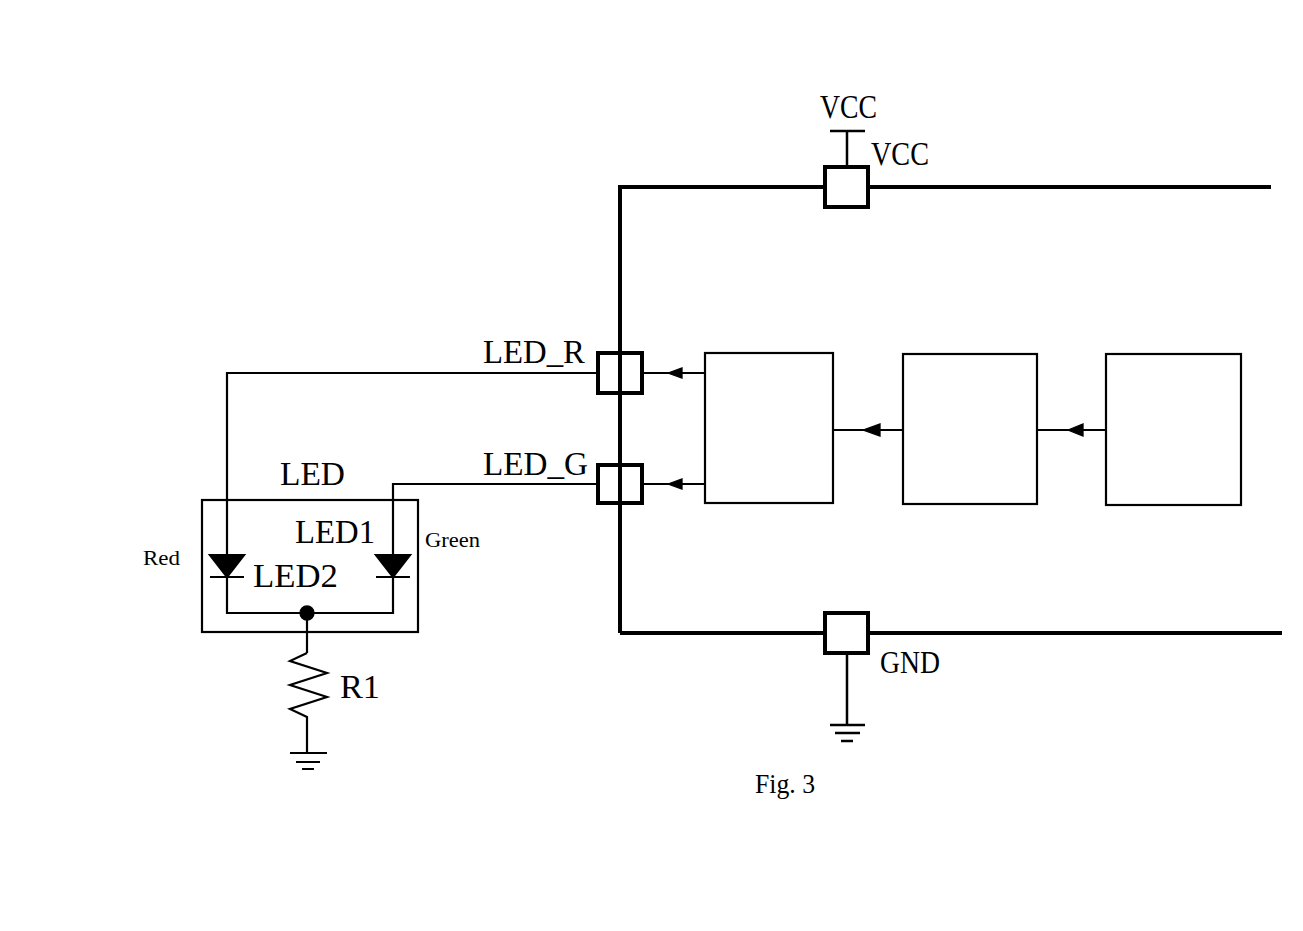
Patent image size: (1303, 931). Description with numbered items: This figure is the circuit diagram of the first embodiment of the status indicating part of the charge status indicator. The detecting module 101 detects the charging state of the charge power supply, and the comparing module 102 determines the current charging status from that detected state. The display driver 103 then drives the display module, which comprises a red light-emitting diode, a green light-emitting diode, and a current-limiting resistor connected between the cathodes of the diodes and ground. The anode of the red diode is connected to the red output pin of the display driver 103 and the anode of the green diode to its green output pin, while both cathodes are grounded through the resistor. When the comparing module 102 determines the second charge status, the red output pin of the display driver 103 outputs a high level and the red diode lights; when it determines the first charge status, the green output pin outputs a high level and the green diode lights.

The detecting module 101 is at (1139, 429).
The comparing module 102 is at (935, 429).
The display driver 103 is at (737, 428).